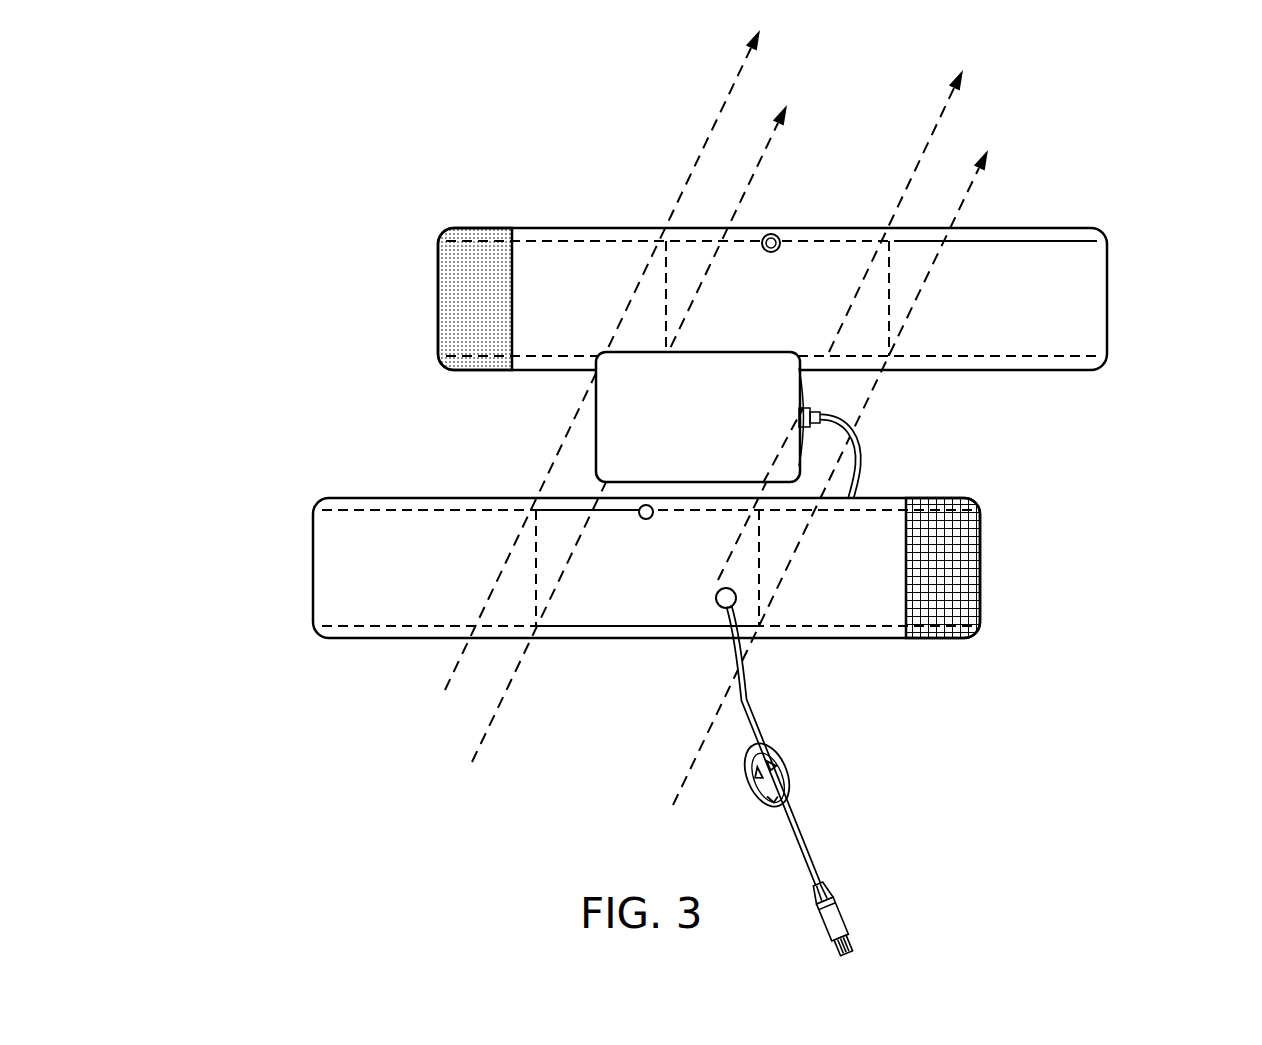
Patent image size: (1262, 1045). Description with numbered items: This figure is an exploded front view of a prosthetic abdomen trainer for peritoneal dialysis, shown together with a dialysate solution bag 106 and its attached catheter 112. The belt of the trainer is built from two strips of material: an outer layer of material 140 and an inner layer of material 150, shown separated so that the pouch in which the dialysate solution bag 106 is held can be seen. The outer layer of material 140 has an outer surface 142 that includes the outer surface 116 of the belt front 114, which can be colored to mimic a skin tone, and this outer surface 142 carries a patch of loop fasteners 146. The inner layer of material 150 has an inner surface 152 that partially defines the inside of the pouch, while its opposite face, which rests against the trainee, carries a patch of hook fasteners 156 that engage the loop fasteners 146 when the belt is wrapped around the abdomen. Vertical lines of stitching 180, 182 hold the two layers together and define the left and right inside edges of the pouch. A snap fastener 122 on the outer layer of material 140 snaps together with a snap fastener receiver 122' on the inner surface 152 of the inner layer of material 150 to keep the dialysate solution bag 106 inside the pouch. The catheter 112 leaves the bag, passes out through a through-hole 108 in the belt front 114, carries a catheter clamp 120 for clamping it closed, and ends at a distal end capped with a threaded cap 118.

The dialysate solution bag 106 is at (713, 431).
The through-hole 108 is at (716, 601).
The catheter 112 is at (862, 465).
The belt front 114 is at (618, 572).
The outer surface 116 is at (583, 535).
The threaded cap 118 is at (858, 925).
The catheter clamp 120 is at (786, 772).
The snap fastener 122 is at (657, 559).
The snap fastener receiver 122' is at (804, 192).
The outer layer of material 140 is at (313, 560).
The outer surface 142 is at (396, 568).
The patch of loop fasteners 146 is at (956, 598).
The inner layer of material 150 is at (1107, 300).
The inner surface 152 is at (1036, 265).
The patch of hook fasteners 156 is at (470, 307).
The vertical line of stitching 180 is at (666, 300).
The vertical line of stitching 182 is at (889, 300).